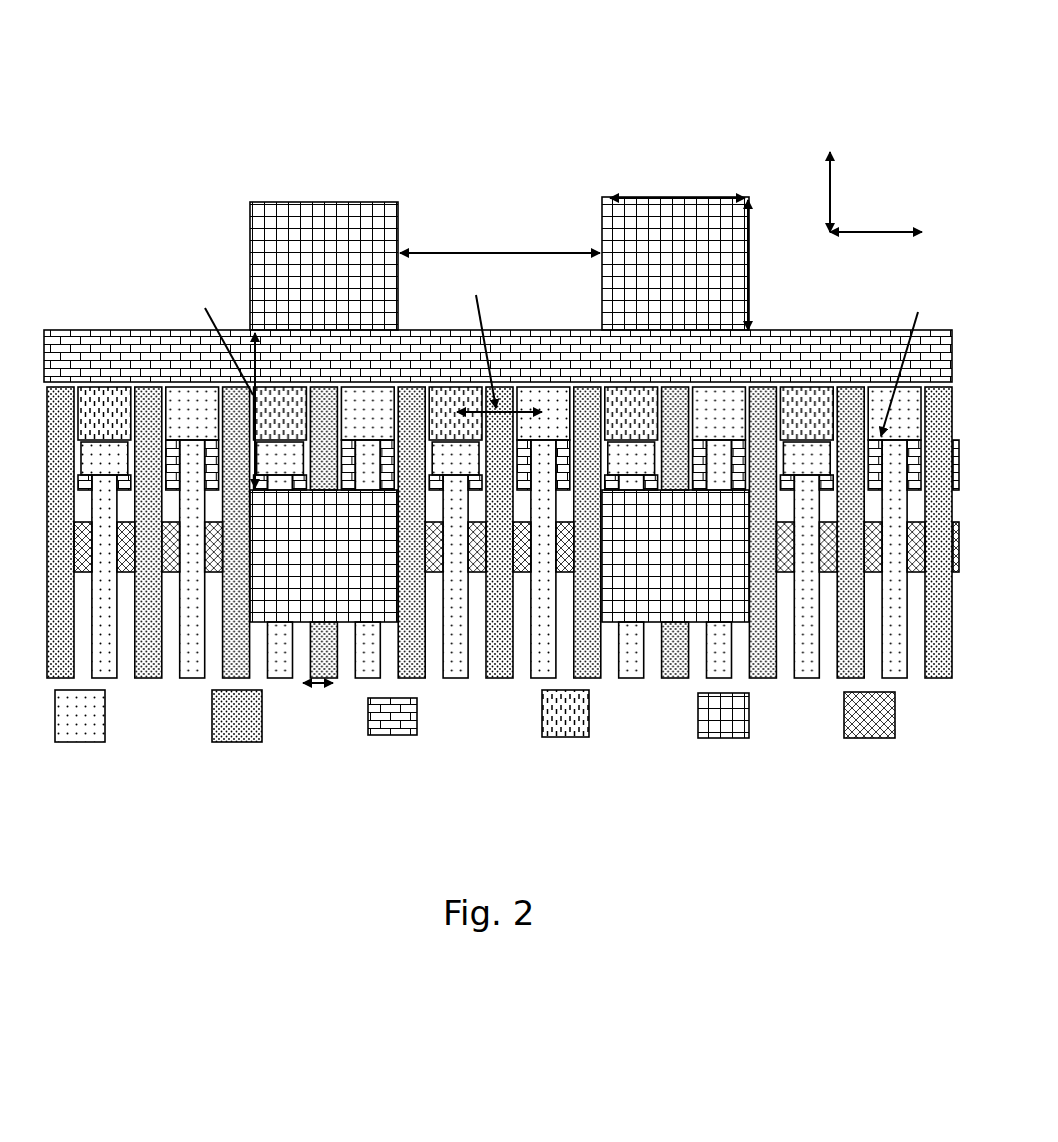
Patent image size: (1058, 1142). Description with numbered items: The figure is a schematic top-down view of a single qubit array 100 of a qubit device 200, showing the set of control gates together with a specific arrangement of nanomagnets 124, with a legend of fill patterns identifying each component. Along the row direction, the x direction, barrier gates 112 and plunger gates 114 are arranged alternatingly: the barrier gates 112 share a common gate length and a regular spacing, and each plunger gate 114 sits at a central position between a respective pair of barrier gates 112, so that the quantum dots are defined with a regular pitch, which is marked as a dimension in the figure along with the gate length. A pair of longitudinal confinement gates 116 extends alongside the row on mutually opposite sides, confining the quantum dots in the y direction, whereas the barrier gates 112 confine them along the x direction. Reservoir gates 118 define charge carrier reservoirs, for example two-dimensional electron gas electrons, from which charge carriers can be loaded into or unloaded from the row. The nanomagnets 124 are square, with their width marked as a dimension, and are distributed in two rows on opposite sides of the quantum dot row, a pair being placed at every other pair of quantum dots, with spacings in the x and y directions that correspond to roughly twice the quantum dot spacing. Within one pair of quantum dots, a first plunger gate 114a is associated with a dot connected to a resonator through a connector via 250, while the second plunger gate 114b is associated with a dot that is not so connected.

The qubit array 100 is at (108, 304).
The qubit device 200 is at (572, 66).
The barrier gates 112 is at (233, 742).
The plunger gates 114 is at (80, 742).
The first plunger gate 114a is at (456, 680).
The second plunger gate 114b is at (545, 680).
The confinement gates 116 is at (390, 735).
The reservoir gates 118 is at (866, 738).
The nanomagnets 124 is at (720, 738).
The connector via 250 is at (562, 737).